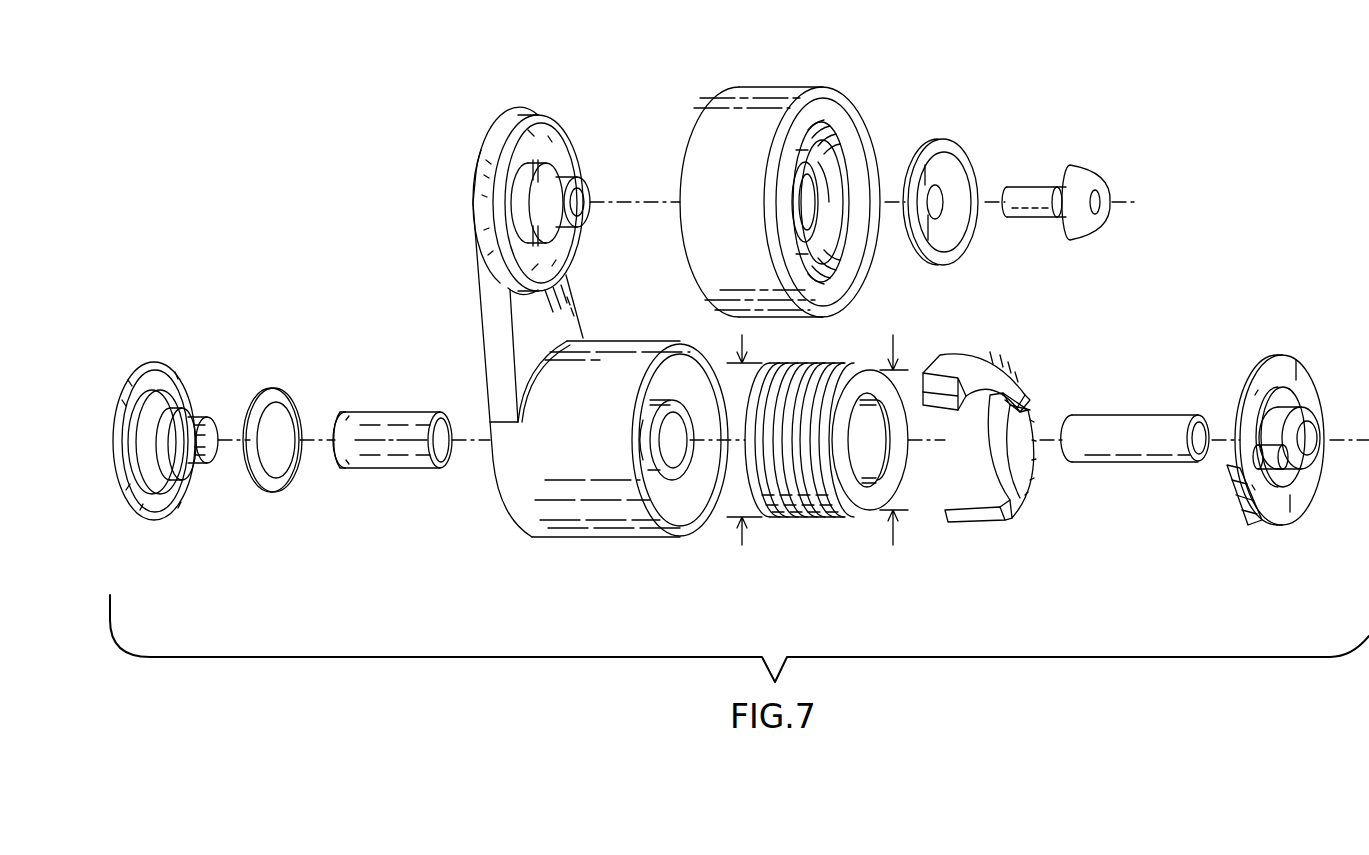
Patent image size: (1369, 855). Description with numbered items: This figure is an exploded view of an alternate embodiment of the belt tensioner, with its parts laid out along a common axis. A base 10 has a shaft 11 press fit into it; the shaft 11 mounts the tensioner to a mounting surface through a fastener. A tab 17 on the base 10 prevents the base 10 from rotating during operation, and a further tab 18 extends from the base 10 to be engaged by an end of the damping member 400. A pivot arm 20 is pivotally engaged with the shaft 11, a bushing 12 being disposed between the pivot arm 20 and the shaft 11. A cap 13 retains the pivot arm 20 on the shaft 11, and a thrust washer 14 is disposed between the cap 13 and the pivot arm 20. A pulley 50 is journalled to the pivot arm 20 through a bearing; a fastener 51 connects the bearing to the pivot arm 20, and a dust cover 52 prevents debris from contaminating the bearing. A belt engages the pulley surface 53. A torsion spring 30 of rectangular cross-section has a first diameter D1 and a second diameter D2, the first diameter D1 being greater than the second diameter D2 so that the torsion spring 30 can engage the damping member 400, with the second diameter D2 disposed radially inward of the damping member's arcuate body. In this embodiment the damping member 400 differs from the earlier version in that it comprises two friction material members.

The base 10 is at (1262, 427).
The shaft 11 is at (1098, 415).
The bushing 12 is at (372, 470).
The cap 13 is at (150, 512).
The thrust washer 14 is at (268, 490).
The tab 17 is at (1263, 468).
The tab 18 is at (1250, 513).
The pivot arm 20 is at (622, 532).
The torsion spring 30 is at (835, 515).
The damping member 400 is at (985, 352).
The pulley 50 is at (756, 179).
The fastener 51 is at (1078, 165).
The dust cover 52 is at (948, 140).
The pulley surface 53 is at (745, 118).
The first diameter D1 is at (744, 463).
The second diameter D2 is at (893, 456).